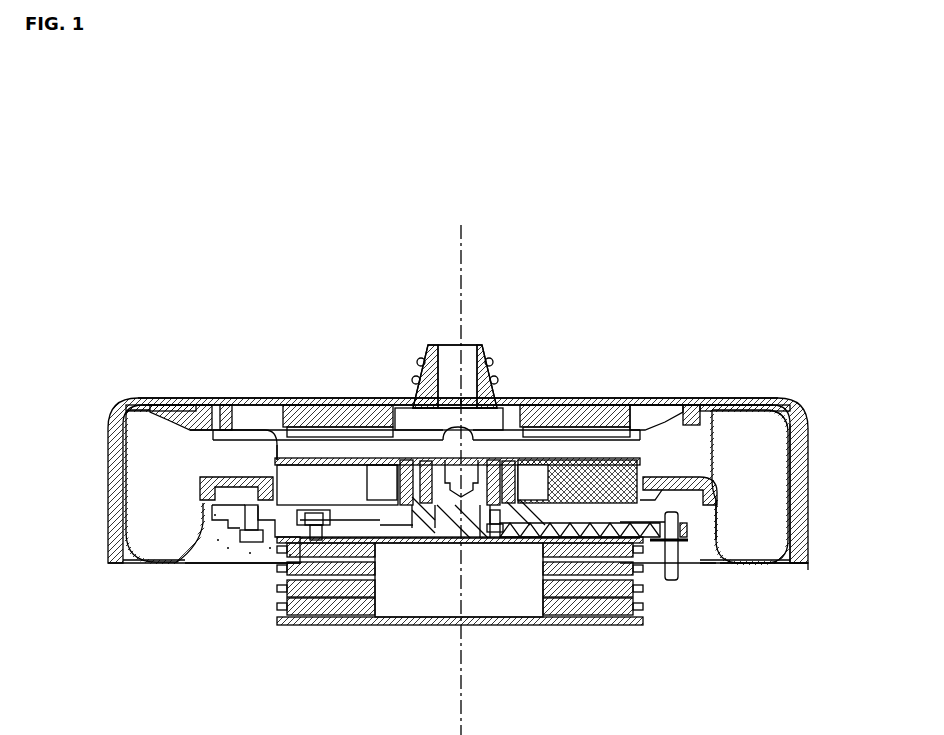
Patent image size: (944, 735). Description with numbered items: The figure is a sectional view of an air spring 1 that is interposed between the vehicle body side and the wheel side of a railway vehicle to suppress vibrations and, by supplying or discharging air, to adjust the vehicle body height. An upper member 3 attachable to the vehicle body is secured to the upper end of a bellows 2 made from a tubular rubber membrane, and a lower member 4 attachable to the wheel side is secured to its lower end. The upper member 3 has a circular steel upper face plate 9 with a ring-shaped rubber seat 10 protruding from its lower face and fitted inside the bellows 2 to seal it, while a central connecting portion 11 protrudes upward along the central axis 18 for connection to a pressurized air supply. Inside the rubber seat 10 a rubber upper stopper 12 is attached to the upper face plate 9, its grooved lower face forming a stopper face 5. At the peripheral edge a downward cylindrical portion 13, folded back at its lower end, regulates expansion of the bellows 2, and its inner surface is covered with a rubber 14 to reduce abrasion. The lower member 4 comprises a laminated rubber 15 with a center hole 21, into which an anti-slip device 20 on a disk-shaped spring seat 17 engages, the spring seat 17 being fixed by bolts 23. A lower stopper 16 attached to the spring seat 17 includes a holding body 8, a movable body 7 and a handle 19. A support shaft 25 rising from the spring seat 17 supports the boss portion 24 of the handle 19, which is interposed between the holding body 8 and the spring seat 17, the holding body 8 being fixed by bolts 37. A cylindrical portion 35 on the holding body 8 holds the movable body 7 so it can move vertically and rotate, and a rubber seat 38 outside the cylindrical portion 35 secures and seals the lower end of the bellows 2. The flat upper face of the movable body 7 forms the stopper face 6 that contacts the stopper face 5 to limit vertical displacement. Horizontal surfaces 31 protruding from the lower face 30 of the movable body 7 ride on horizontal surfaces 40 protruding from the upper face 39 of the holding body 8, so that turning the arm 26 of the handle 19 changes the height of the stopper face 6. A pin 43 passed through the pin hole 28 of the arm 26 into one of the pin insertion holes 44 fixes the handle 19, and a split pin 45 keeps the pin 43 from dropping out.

The air spring 1 is at (638, 161).
The bellows 2 is at (753, 567).
The upper member 3 is at (610, 367).
The lower member 4 is at (268, 648).
The stopper face 5 is at (640, 440).
The stopper face 6 is at (640, 460).
The movable body 7 is at (328, 505).
The holding body 8 is at (388, 516).
The upper face plate 9 is at (258, 398).
The rubber seat 10 is at (703, 430).
The connecting portion 11 is at (484, 352).
The upper stopper 12 is at (556, 410).
The cylindrical portion 13 is at (814, 543).
The rubber 14 is at (793, 567).
The laminated rubber 15 is at (565, 618).
The lower stopper 16 is at (262, 455).
The spring seat 17 is at (280, 535).
The central axis 18 is at (462, 242).
The handle 19 is at (692, 538).
The anti-slip device 20 is at (518, 542).
The center hole 21 is at (414, 611).
The bolts 23 is at (313, 510).
The boss portion 24 is at (423, 533).
The support shaft 25 is at (472, 513).
The arm 26 is at (657, 530).
The pin hole 28 is at (683, 547).
The lower face 30 is at (339, 621).
The horizontal surfaces 31 is at (611, 618).
The cylindrical portion 35 is at (283, 462).
The bolts 37 is at (248, 543).
The rubber seat 38 is at (205, 485).
The upper face 39 is at (578, 482).
The horizontal surfaces 40 is at (342, 512).
The pin 43 is at (677, 540).
The pin insertion holes 44 is at (700, 478).
The split pin 45 is at (688, 543).